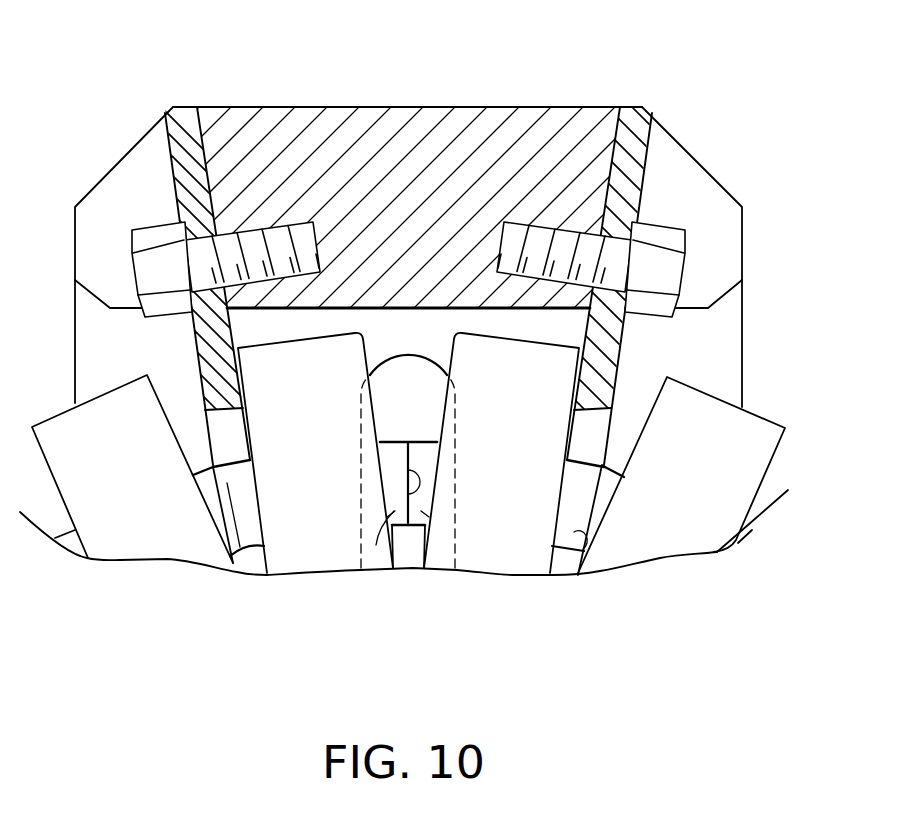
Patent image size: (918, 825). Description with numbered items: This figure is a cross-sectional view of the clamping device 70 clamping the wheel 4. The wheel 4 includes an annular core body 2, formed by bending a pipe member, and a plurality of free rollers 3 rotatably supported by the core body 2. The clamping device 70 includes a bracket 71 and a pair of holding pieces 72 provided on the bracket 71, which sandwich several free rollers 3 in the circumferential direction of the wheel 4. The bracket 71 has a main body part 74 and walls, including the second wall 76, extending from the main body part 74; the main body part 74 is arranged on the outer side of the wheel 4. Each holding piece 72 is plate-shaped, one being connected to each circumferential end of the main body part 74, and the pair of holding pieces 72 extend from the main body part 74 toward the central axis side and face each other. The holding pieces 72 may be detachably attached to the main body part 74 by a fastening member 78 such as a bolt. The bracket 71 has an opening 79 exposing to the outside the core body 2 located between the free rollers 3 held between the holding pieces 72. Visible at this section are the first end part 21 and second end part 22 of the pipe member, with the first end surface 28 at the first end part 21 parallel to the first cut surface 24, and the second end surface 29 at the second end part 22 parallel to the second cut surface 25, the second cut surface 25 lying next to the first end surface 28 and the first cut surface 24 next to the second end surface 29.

The clamping device 70 is at (245, 98).
The bracket 71 is at (383, 98).
The main body part 74 is at (532, 117).
The second wall 76 is at (732, 313).
The fastening member 78 is at (153, 233).
The holding pieces 72 is at (203, 338).
The opening 79 is at (402, 360).
The first end surface 28 is at (396, 441).
The second end surface 29 is at (412, 485).
The first end part 21 is at (422, 512).
The second end part 22 is at (376, 545).
The second cut surface 25 is at (580, 478).
The first cut surface 24 is at (602, 465).
The core body 2 is at (254, 545).
The free rollers 3 is at (188, 553).
The wheel 4 is at (120, 568).